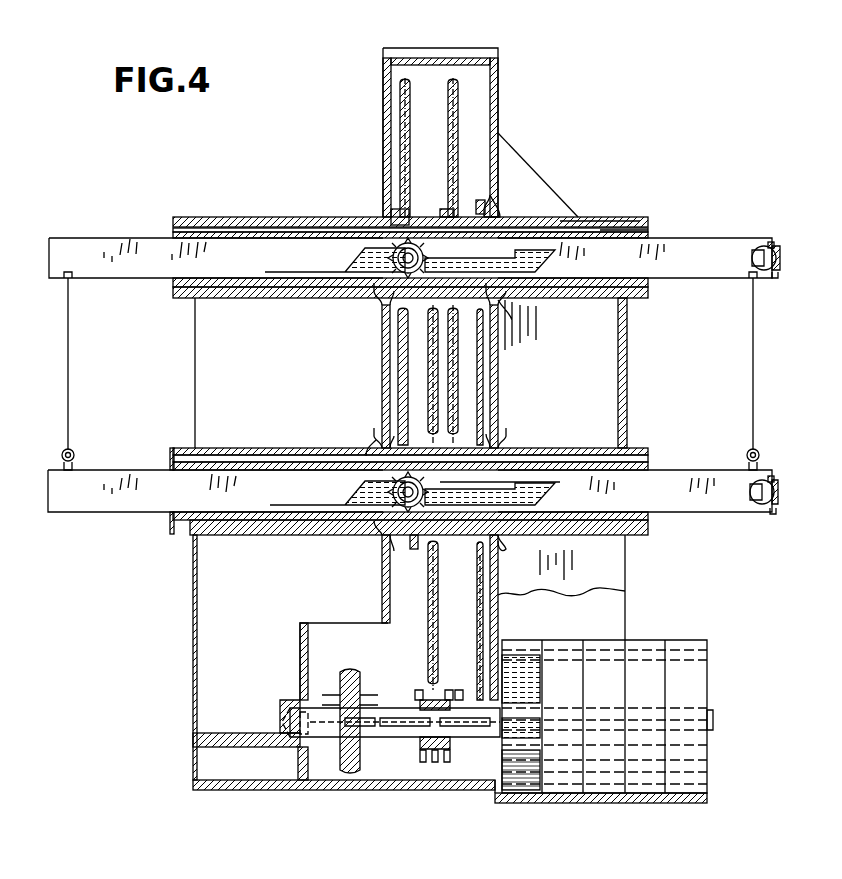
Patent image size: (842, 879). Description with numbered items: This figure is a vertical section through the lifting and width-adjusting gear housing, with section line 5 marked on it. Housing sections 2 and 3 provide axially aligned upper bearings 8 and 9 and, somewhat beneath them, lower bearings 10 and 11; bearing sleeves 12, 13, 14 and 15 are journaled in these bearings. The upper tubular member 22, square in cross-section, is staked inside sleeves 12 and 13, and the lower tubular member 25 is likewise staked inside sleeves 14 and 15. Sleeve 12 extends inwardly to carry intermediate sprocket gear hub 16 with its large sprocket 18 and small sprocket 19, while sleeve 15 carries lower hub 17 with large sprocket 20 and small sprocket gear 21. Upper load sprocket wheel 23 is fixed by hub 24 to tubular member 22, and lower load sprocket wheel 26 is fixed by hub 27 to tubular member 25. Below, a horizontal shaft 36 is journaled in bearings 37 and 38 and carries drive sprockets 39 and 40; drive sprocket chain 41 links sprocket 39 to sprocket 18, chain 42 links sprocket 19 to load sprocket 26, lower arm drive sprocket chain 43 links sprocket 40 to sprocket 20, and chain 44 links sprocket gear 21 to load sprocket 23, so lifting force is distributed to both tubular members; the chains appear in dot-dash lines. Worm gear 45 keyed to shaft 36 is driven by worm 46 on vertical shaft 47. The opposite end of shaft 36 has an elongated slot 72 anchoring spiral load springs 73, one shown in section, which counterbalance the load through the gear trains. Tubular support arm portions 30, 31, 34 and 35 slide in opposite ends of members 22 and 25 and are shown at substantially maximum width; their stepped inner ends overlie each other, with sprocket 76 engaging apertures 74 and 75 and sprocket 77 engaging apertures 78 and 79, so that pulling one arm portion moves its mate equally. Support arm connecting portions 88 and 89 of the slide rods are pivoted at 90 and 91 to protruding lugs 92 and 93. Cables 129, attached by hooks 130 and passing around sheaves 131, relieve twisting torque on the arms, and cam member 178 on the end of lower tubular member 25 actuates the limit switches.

The housing section 2 is at (498, 102).
The housing section 3 is at (384, 102).
The section line 5 is at (468, 30).
The upper bearing 8 is at (592, 217).
The upper bearing 9 is at (278, 217).
The lower bearing 10 is at (578, 538).
The lower bearing 11 is at (228, 536).
The bearing sleeve 12 is at (628, 217).
The bearing sleeve 13 is at (214, 217).
The bearing sleeve 14 is at (634, 536).
The bearing sleeve 15 is at (284, 536).
The intermediate sprocket gear hub 16 is at (458, 216).
The intermediate sprocket gear hub 17 is at (416, 549).
The large sprocket 18 is at (456, 134).
The small sprocket 19 is at (488, 212).
The large sprocket 20 is at (428, 628).
The small sprocket gear 21 is at (380, 547).
The upper tubular member 22 is at (640, 228).
The upper load sprocket wheel 23 is at (410, 146).
The hub 24 is at (406, 216).
The lower tubular member 25 is at (603, 470).
The lower load sprocket wheel 26 is at (484, 360).
The hub 27 is at (497, 544).
The tubular support arm portion 30 is at (654, 270).
The tubular support arm portion 31 is at (144, 270).
The tubular support arm portion 34 is at (692, 498).
The tubular support arm portion 35 is at (180, 498).
The horizontal shaft 36 is at (484, 727).
The bearing 37 is at (452, 758).
The bearing 38 is at (344, 708).
The drive sprocket 39 is at (454, 700).
The drive sprocket 40 is at (426, 700).
The drive sprocket chain 41 is at (478, 586).
The sprocket chain 42 is at (500, 318).
The lower arm drive sprocket chain 43 is at (426, 684).
The sprocket chain 44 is at (382, 440).
The worm gear 45 is at (360, 690).
The worm 46 is at (332, 694).
The vertical shaft 47 is at (360, 644).
The elongated slot 72 is at (528, 720).
The spiral load spring 73 is at (595, 676).
The aperture 74 is at (467, 271).
The aperture 75 is at (378, 248).
The sprocket 76 is at (424, 261).
The sprocket 77 is at (470, 488).
The aperture 78 is at (470, 500).
The aperture 79 is at (382, 484).
The support arm connecting portion 88 is at (777, 272).
The support arm connecting portion 89 is at (774, 481).
The pivot connection 90 is at (784, 258).
The pivot connection 91 is at (784, 496).
The protruding lug 92 is at (768, 244).
The protruding lug 93 is at (766, 510).
The cable 129 is at (68, 380).
The hook 130 is at (75, 456).
The sheave 131 is at (60, 281).
The cam member 178 is at (172, 532).